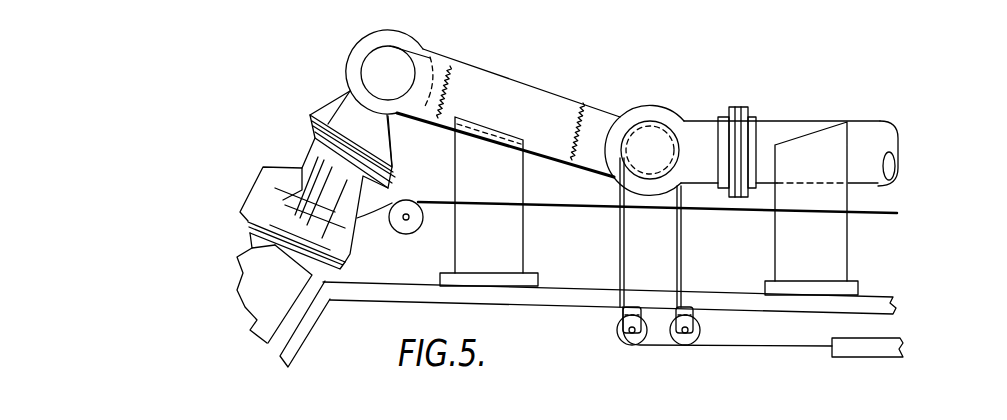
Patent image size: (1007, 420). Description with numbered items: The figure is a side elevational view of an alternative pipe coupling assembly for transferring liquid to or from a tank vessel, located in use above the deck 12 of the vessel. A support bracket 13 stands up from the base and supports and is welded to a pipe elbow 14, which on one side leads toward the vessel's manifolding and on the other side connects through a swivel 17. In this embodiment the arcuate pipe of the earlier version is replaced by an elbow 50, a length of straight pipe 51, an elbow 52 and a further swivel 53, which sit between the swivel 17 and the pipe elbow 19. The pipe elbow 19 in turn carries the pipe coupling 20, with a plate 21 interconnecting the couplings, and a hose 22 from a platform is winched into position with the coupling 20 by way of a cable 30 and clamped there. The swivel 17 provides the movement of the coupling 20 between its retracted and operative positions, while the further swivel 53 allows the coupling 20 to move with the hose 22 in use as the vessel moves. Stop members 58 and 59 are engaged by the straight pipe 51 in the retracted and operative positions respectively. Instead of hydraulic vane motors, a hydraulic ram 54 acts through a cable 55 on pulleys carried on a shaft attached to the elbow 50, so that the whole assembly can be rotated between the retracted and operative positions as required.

The deck 12 is at (722, 298).
The support bracket 13 is at (680, 268).
The pipe elbow 14 is at (705, 184).
The swivel 17 is at (660, 105).
The pipe elbow 19 is at (345, 97).
The pipe coupling 20 is at (303, 174).
The plate 21 is at (311, 116).
The hose 22 is at (280, 303).
The cable 30 is at (574, 202).
The elbow 50 is at (605, 117).
The length of straight pipe 51 is at (520, 113).
The elbow 52 is at (417, 91).
The further swivel 53 is at (426, 48).
The hydraulic ram 54 is at (863, 348).
The cable 55 is at (793, 349).
The stop member 58 is at (818, 270).
The stop member 59 is at (498, 257).